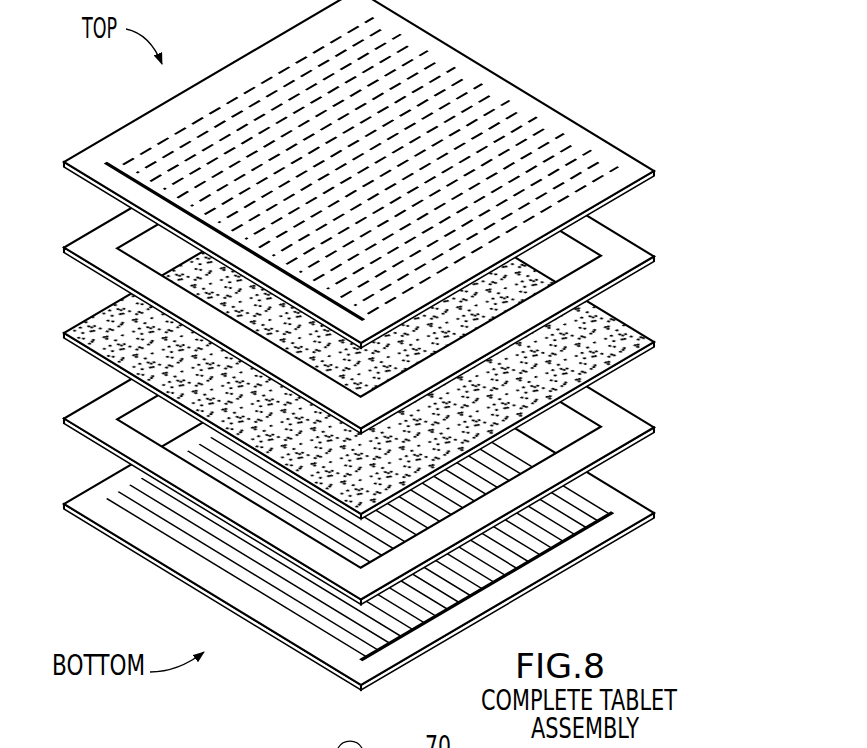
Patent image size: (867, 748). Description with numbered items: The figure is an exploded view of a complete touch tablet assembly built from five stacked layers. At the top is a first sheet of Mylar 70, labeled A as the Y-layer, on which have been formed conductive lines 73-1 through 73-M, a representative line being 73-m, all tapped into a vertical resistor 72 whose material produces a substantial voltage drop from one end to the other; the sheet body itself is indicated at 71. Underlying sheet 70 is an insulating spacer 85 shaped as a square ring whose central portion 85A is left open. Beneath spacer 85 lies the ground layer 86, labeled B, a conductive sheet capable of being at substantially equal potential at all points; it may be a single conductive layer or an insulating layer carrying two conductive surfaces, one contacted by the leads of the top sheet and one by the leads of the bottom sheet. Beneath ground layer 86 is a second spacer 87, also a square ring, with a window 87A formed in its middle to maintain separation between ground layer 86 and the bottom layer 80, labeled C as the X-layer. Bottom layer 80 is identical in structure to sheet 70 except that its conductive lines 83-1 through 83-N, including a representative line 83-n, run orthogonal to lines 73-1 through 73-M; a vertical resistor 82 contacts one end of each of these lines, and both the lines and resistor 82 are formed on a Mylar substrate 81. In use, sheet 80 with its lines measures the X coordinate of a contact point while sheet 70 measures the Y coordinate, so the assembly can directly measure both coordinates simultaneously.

The first sheet of Mylar 70 is at (367, 174).
The Y-layer substrate 71 is at (550, 105).
The vertical resistor 72 is at (108, 163).
The conductive line 73-1 is at (592, 173).
The conductive line 73-m is at (463, 78).
The conductive line 73-M is at (291, 68).
The bottom layer 80 is at (401, 511).
The Mylar substrate 81 is at (173, 558).
The vertical resistor 82 is at (607, 518).
The conductive line 83-1 is at (580, 498).
The conductive line 83-n is at (165, 513).
The conductive line 83-N is at (220, 567).
The spacer 85 is at (427, 255).
The central portion 85A is at (582, 242).
The ground layer 86 is at (687, 320).
The second spacer 87 is at (421, 426).
The window 87A is at (574, 430).
The Y-layer assembly A is at (393, 174).
The ground layer B is at (416, 340).
The X-layer assembly C is at (401, 511).